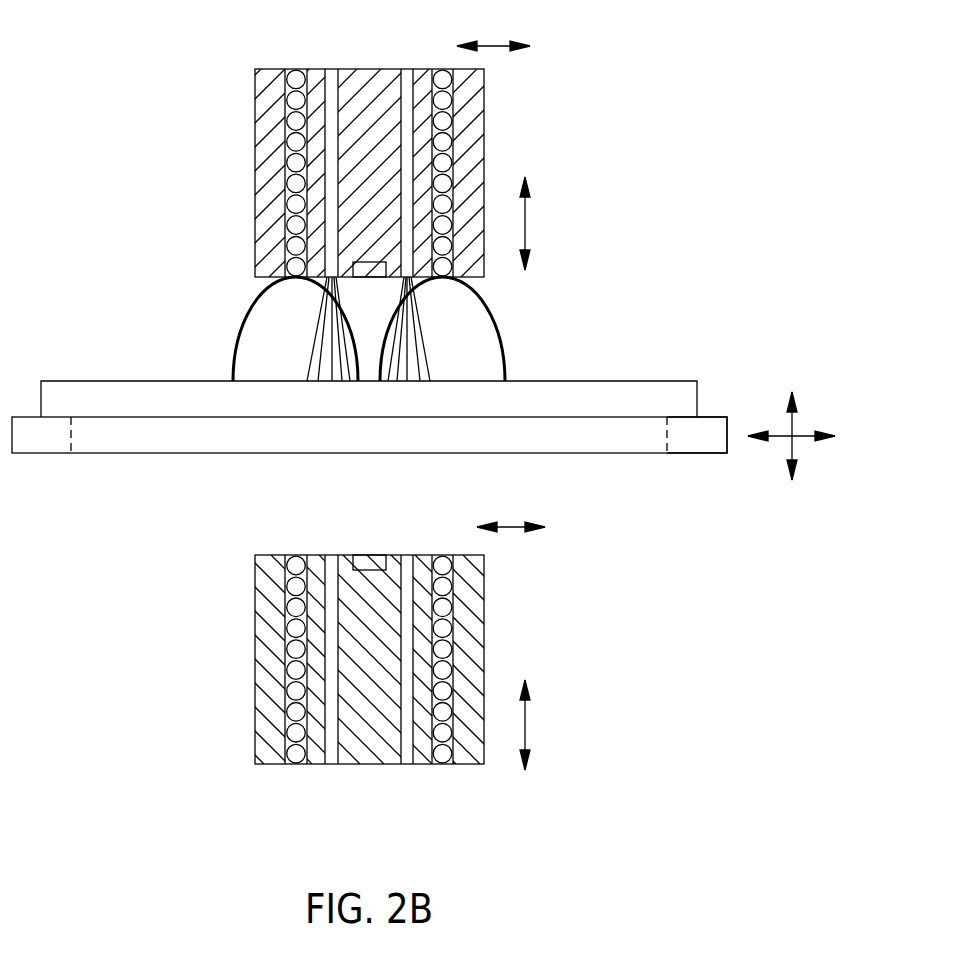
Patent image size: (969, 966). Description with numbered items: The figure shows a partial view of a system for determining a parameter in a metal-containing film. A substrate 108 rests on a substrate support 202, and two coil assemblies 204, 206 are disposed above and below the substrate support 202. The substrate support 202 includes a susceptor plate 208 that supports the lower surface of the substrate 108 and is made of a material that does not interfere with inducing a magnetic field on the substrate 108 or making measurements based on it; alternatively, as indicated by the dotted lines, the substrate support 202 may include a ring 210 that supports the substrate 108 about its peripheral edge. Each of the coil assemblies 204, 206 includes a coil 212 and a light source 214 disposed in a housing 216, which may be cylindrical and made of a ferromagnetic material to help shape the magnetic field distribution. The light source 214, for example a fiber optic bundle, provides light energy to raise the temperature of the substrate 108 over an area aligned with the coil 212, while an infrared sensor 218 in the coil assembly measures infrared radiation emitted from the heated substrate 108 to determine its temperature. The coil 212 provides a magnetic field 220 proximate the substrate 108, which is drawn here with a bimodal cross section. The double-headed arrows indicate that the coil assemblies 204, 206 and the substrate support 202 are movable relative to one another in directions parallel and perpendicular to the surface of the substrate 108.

The substrate 108 is at (637, 380).
The substrate support 202 is at (423, 407).
The coil assembly 204 is at (516, 121).
The coil assembly 206 is at (520, 580).
The susceptor plate 208 is at (612, 455).
The ring 210 is at (705, 455).
The coil 212 is at (290, 244).
The light source 214 is at (332, 69).
The housing 216 is at (255, 148).
The infrared sensor 218 is at (373, 277).
The magnetic field 220 is at (242, 339).